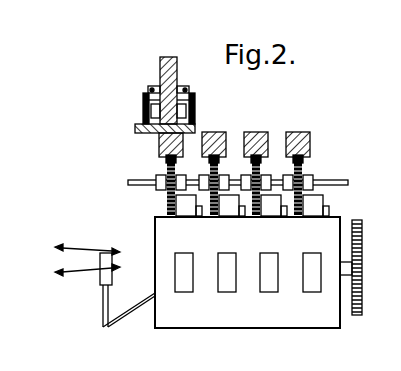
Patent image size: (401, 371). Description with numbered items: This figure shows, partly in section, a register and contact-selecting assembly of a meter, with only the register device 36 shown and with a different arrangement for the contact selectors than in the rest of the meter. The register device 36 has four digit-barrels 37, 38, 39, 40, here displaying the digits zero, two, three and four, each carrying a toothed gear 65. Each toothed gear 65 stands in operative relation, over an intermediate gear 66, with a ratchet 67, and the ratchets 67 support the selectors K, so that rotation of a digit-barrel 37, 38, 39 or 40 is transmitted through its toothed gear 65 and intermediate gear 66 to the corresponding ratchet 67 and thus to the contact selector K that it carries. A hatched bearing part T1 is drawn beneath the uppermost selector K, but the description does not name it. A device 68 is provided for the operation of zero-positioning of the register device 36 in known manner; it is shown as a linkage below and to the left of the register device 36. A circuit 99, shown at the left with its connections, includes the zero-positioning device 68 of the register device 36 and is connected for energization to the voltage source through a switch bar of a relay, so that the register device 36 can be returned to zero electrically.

The selectors K is at (143, 99).
The bearing plate T1 is at (140, 117).
The register device 36 is at (313, 115).
The digit-barrel 37 is at (190, 292).
The digit-barrel 38 is at (233, 292).
The digit-barrel 39 is at (275, 292).
The digit-barrel 40 is at (318, 292).
The toothed gears 65 is at (166, 213).
The intermediate gears 66 is at (158, 174).
The ratchets 67 is at (159, 144).
The zero-positioning device 68 is at (120, 344).
The circuit 99 is at (32, 268).